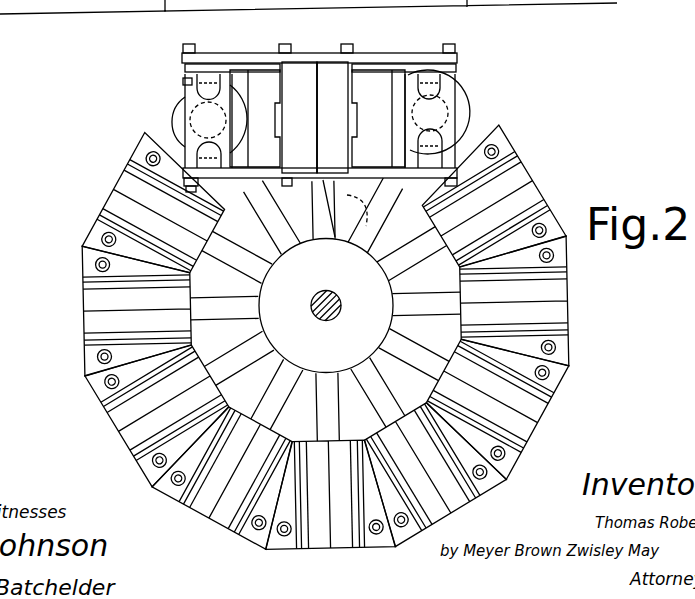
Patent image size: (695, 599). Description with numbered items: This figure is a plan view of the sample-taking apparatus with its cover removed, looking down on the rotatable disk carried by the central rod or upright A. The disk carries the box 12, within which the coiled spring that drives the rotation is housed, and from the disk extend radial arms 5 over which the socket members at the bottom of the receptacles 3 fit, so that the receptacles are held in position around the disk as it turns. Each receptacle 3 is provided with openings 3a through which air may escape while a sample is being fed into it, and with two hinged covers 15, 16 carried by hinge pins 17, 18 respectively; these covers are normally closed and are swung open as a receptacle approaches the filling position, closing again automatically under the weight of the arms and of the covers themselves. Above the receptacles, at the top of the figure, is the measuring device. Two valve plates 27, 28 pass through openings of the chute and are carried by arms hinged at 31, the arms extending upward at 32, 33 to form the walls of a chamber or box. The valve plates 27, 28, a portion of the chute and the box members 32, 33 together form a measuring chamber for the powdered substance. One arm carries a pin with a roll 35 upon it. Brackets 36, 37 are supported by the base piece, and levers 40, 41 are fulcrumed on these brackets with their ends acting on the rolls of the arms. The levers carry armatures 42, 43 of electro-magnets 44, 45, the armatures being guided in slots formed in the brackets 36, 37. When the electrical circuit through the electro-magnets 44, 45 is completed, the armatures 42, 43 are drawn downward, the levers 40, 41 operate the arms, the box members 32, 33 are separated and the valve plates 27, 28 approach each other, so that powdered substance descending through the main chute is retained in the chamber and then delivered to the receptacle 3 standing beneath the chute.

The receptacles 3 is at (128, 193).
The openings 3a is at (93, 268).
The radial arms 5 is at (223, 302).
The box 12 is at (273, 318).
The rod or upright A is at (326, 294).
The cover 15 is at (528, 196).
The cover 16 is at (513, 173).
The hinge pin 17 is at (524, 443).
The hinge pin 18 is at (548, 395).
The valve plate 27 is at (262, 88).
The valve plate 28 is at (378, 95).
The hinge 31 is at (317, 64).
The box member 32 is at (302, 82).
The box member 33 is at (340, 52).
The roll 35 is at (358, 60).
The bracket 36 is at (186, 68).
The bracket 37 is at (452, 72).
The lever 40 is at (211, 55).
The lever 41 is at (456, 58).
The armature 42 is at (176, 127).
The armature 43 is at (472, 118).
The electro-magnet 44 is at (180, 105).
The electro-magnet 45 is at (463, 100).